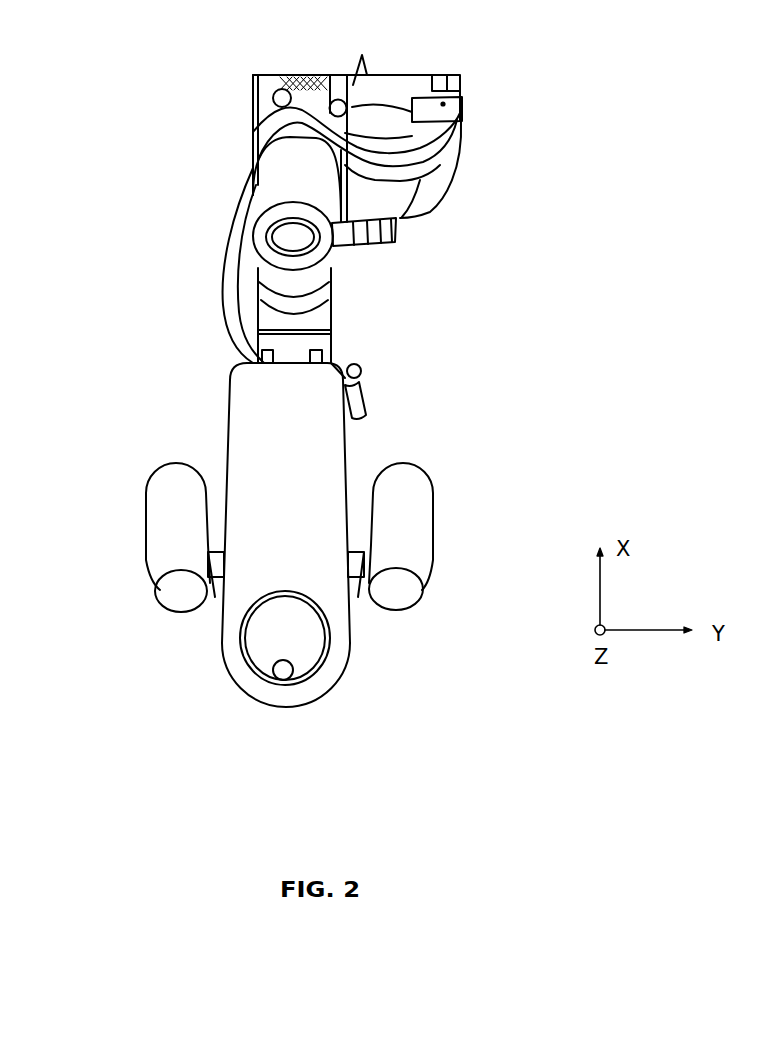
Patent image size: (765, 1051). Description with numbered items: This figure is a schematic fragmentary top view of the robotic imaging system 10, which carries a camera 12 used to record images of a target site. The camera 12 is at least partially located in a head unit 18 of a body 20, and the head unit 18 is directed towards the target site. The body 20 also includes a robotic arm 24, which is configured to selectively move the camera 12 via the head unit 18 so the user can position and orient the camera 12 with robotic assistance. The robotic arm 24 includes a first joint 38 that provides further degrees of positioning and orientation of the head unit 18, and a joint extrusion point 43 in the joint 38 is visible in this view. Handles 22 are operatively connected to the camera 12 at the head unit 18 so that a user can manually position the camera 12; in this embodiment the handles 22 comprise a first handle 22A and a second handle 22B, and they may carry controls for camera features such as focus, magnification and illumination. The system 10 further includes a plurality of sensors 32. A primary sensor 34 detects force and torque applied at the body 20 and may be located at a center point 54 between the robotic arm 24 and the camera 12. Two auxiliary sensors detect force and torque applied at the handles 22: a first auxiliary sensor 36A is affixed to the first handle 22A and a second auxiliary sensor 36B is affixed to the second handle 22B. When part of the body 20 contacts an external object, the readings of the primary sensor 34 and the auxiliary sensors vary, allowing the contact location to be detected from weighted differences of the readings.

The robotic imaging system 10 is at (128, 58).
The camera 12 is at (361, 663).
The head unit 18 is at (183, 689).
The body 20 is at (222, 423).
The handles 22 is at (430, 456).
The first handle 22A is at (147, 512).
The second handle 22B is at (436, 512).
The robotic arm 24 is at (155, 221).
The sensors 32 is at (134, 610).
The primary sensor 34 is at (268, 241).
The first auxiliary sensor 36A is at (170, 622).
The second auxiliary sensor 36B is at (410, 618).
The first joint 38 is at (236, 94).
The joint extrusion point 43 is at (280, 89).
The center point 54 is at (387, 299).